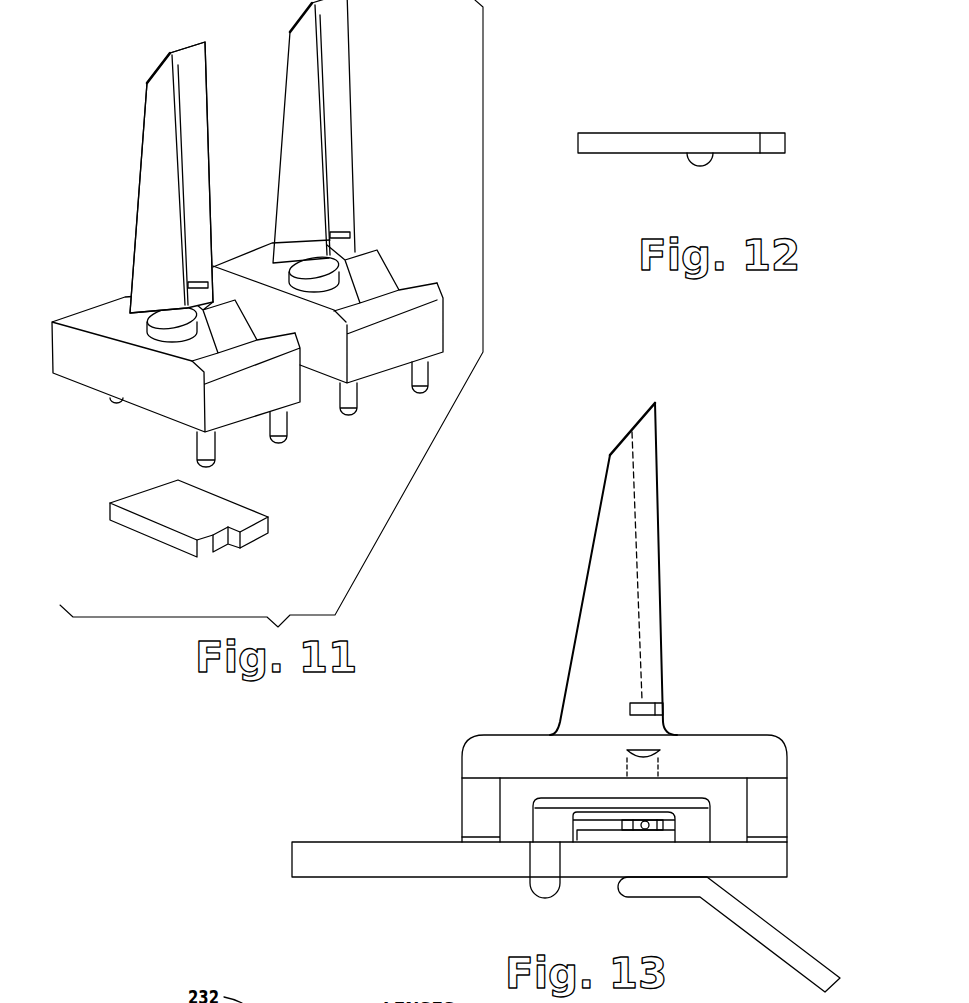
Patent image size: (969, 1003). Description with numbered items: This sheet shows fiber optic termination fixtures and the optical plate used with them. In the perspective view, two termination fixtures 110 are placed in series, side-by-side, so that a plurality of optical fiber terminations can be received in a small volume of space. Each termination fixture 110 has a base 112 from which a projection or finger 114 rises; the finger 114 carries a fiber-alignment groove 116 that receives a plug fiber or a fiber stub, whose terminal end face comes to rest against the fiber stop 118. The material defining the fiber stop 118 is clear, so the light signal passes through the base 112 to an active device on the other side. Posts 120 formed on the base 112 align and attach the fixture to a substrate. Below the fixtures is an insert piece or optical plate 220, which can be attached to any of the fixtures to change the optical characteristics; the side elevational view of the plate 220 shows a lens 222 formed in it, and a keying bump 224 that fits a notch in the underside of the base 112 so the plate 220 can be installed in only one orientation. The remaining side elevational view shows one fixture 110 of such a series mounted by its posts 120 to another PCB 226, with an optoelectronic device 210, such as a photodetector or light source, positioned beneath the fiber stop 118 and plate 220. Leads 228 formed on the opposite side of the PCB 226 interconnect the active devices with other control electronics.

In FIG. 11, the termination fixture 110 is at (137, 135).
In FIG. 13, the termination fixture 110 is at (596, 650).
In FIG. 11, the base 112 is at (137, 381).
In FIG. 11, the finger 114 is at (153, 163).
In FIG. 11, the fiber-alignment groove 116 is at (180, 160).
In FIG. 13, the fiber-alignment groove 116 is at (637, 568).
In FIG. 11, the fiber stop 118 is at (195, 295).
In FIG. 13, the fiber stop 118 is at (663, 708).
In FIG. 11, the posts 120 is at (345, 398).
In FIG. 13, the posts 120 is at (463, 810).
In FIG. 13, the optoelectronic device 210 is at (617, 823).
In FIG. 11, the optical plate 220 is at (178, 538).
In FIG. 12, the optical plate 220 is at (623, 133).
In FIG. 13, the optical plate 220 is at (692, 810).
In FIG. 12, the lens 222 is at (697, 163).
In FIG. 11, the bump 224 is at (233, 540).
In FIG. 12, the bump 224 is at (785, 143).
In FIG. 13, the PCB 226 is at (357, 848).
In FIG. 13, the leads 228 is at (775, 925).